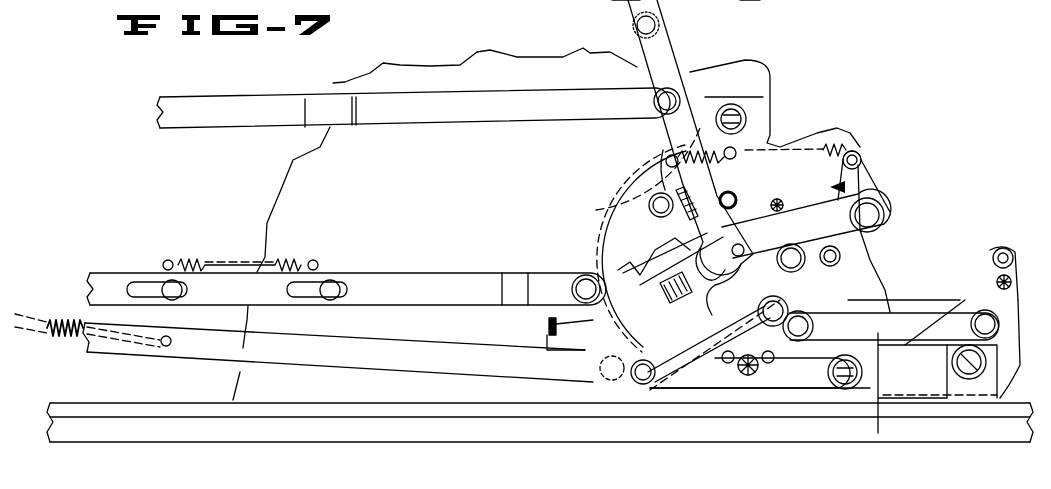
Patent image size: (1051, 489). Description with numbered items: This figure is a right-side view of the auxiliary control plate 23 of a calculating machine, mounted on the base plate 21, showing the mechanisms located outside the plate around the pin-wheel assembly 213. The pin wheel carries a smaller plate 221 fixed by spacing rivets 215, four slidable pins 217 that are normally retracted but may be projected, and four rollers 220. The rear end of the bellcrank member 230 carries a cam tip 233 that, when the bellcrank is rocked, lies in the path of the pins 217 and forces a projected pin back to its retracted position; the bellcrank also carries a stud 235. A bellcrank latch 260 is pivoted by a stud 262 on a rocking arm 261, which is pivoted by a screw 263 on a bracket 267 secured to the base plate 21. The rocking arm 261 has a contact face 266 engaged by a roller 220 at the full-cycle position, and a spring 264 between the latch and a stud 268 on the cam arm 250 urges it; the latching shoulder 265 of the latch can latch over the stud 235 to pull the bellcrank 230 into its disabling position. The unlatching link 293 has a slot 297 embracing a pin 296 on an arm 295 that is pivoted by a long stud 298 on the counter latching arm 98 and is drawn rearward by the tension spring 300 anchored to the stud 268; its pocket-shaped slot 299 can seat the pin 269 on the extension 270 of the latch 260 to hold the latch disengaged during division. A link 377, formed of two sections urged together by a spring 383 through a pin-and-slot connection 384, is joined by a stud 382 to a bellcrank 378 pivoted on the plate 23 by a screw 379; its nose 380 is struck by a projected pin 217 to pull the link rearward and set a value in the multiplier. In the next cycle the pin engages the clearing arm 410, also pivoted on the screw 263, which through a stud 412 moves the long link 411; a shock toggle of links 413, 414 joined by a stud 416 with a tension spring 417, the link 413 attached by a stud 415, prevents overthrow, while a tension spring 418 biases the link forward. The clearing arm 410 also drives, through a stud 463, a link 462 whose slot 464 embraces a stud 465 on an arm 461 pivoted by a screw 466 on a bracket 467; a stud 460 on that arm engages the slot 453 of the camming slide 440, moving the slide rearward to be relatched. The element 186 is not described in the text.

The base plate 21 is at (502, 432).
The auxiliary control plate 23 is at (285, 192).
The counter latching arm 98 is at (628, 30).
The pivot screw 186 is at (748, 124).
The pin-wheel assembly 213 is at (872, 168).
The spacing rivets 215 is at (797, 188).
The slidable pins 217 is at (745, 272).
The rollers 220 is at (797, 270).
The plate 221 is at (875, 260).
The bellcrank member 230 is at (617, 257).
The cam tip 233 is at (660, 270).
The stud 235 is at (668, 342).
The cam arm 250 is at (737, 140).
The bellcrank latch 260 is at (826, 239).
The rocking arm 261 is at (878, 285).
The stud 262 is at (884, 216).
The screw 263 is at (838, 375).
The spring 264 is at (833, 147).
The latching shoulder 265 is at (640, 305).
The contact face 266 is at (882, 243).
The bracket 267 is at (845, 390).
The stud 268 is at (737, 155).
The pin 269 is at (649, 205).
The extension 270 is at (657, 236).
The unlatching link 293 is at (220, 108).
The arm 295 is at (662, 55).
The pin 296 is at (660, 85).
The slot 297 is at (644, 108).
The long stud 298 is at (657, 24).
The pocket-shaped slot 299 is at (725, 208).
The tension spring 300 is at (666, 159).
The link 377 is at (378, 275).
The bellcrank 378 is at (548, 328).
The screw 379 is at (597, 380).
The nose 380 is at (708, 303).
The stud 382 is at (578, 282).
The spring 383 is at (207, 267).
The pin-and-slot connection 384 is at (143, 287).
The clearing arm 410 is at (885, 318).
The long link 411 is at (353, 340).
The stud 412 is at (760, 310).
The link 413 is at (690, 380).
The link 414 is at (776, 377).
The stud 415 is at (648, 385).
The stud 416 is at (755, 385).
The tension spring 417 is at (733, 380).
The tension spring 418 is at (67, 337).
The camming slide 440 is at (928, 352).
The slot 453 is at (995, 258).
The stud 460 is at (995, 282).
The arm 461 is at (1017, 340).
The link 462 is at (878, 400).
The stud 463 is at (813, 326).
The slot 464 is at (969, 333).
The stud 465 is at (983, 313).
The screw 466 is at (968, 380).
The bracket 467 is at (950, 387).